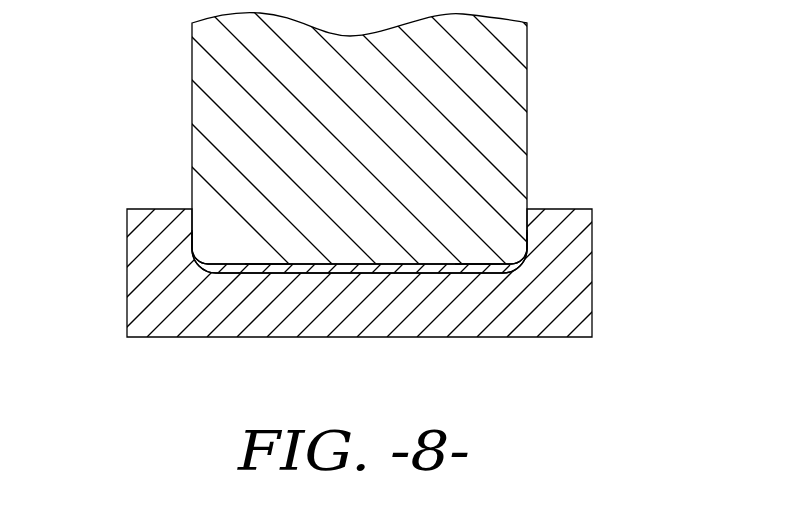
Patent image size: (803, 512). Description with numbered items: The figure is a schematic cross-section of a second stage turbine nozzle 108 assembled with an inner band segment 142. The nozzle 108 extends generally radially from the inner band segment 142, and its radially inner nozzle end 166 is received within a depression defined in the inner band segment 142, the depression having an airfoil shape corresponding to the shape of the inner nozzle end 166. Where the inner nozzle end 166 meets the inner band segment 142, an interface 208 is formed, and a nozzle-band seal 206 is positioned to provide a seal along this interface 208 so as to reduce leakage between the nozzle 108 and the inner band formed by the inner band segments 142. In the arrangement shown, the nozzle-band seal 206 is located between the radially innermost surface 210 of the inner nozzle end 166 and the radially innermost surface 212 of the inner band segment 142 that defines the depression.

The second stage turbine nozzle 108 is at (500, 70).
The inner band segment 142 is at (578, 307).
The inner nozzle end 166 is at (237, 232).
The nozzle-band seal 206 is at (367, 270).
The interface 208 is at (532, 268).
The radially innermost surface of inner nozzle end 210 is at (267, 265).
The radially innermost surface of inner band segment 212 is at (477, 257).